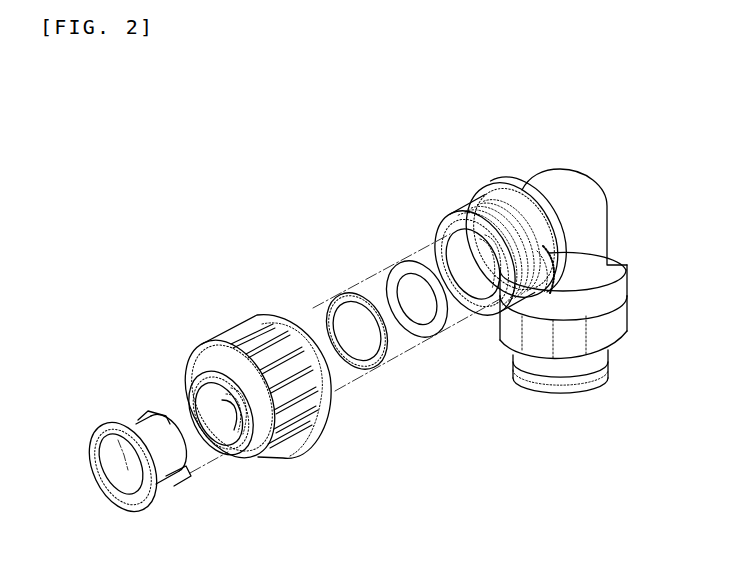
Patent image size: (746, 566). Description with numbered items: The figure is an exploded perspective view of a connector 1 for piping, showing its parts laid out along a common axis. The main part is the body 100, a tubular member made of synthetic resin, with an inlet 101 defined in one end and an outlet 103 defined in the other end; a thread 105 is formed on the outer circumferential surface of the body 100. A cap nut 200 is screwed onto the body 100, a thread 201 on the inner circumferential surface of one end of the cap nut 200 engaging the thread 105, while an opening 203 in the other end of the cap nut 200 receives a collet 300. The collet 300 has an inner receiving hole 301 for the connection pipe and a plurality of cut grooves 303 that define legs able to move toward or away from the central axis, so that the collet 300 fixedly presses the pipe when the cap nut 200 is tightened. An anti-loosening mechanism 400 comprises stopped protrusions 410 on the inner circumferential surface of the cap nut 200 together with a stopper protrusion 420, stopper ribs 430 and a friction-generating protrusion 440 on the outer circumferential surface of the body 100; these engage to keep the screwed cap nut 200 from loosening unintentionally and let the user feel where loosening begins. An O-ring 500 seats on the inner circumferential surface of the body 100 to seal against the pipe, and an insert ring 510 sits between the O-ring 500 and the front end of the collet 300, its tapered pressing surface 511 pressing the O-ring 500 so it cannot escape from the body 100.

The connector 1 is at (288, 184).
The body 100 is at (583, 183).
The inlet 101 is at (446, 247).
The outlet 103 is at (570, 392).
The thread 105 is at (460, 209).
The cap nut 200 is at (225, 340).
The thread 201 is at (223, 456).
The opening 203 is at (200, 396).
The collet 300 is at (108, 420).
The inner receiving hole 301 is at (123, 457).
The cut grooves 303 is at (170, 482).
The anti-loosening mechanism 400 is at (538, 212).
The stopped protrusion 410 is at (277, 313).
The stopper protrusion 420 is at (606, 253).
The stopper rib 430 is at (600, 296).
The friction-generating protrusion 440 is at (550, 264).
The O-ring 500 is at (431, 330).
The insert ring 510 is at (337, 297).
The pressing surface 511 is at (360, 294).